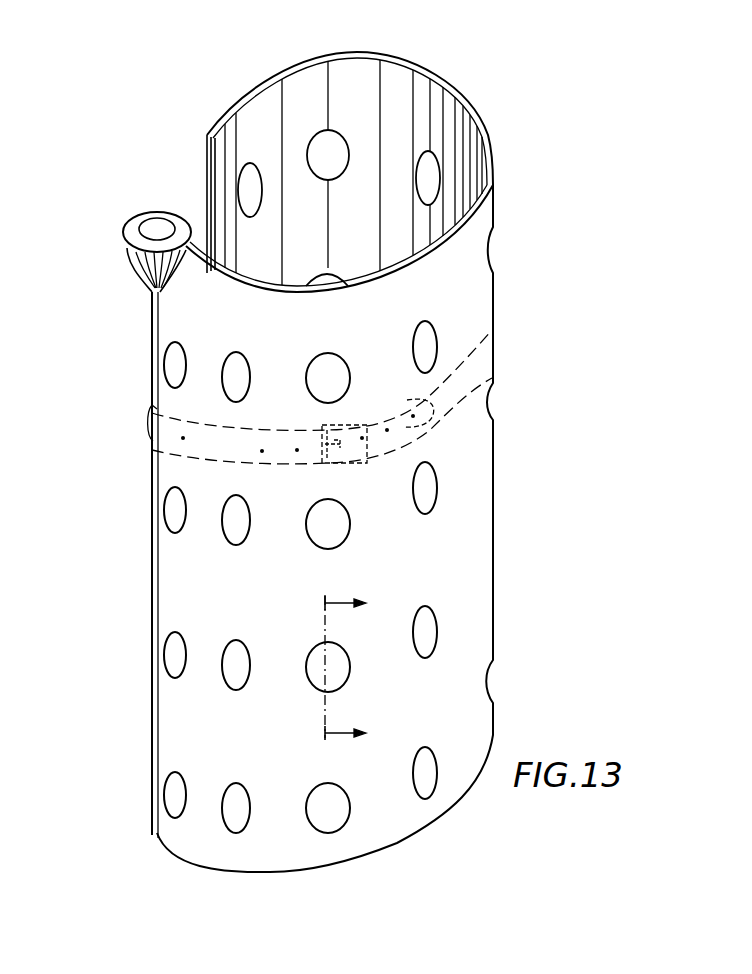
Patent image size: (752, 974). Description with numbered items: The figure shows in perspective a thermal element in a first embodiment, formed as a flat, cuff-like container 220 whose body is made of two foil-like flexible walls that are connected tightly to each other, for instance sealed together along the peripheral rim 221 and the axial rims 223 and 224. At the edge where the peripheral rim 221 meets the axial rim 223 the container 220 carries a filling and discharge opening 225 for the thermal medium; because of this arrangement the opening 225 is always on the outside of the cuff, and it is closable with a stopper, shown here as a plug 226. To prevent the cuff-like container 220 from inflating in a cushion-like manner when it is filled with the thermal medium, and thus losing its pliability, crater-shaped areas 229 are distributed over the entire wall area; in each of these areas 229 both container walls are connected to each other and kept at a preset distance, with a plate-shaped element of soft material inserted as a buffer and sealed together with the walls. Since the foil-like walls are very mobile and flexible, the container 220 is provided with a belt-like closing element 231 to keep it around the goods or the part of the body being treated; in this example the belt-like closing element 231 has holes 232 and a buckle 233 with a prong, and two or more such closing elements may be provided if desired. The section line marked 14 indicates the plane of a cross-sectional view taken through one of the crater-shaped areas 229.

The cuff-like container 220 is at (502, 228).
The peripheral rim 221 is at (367, 283).
The axial rim 223 is at (152, 538).
The axial rim 224 is at (207, 164).
The filling and discharge opening 225 is at (130, 223).
The plug 226 is at (132, 262).
The crater-shaped areas 229 is at (328, 157).
The belt-like closing element 231 is at (160, 425).
The holes 232 is at (223, 448).
The buckle 233 is at (357, 418).
The section line 14- 14 is at (350, 660).